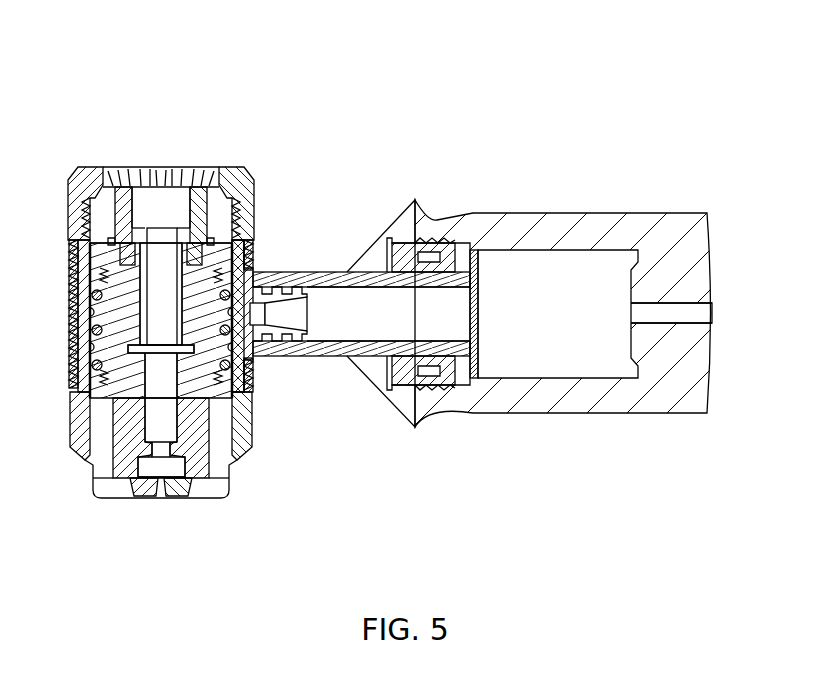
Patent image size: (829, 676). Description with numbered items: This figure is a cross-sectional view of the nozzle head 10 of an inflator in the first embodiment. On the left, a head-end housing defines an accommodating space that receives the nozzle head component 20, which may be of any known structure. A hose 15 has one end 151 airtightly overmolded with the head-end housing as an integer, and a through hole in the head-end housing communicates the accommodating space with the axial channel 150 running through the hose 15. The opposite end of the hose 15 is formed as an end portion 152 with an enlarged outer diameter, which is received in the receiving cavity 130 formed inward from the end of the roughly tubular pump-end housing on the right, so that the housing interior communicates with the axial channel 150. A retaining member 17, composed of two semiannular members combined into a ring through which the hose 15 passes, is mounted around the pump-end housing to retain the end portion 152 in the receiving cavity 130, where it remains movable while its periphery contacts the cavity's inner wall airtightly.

The nozzle head 10 is at (460, 86).
The nozzle head component 20 is at (162, 193).
The hose 15 is at (322, 272).
The retaining member 17 is at (433, 238).
The end portion 152 is at (468, 250).
The receiving cavity 130 is at (567, 300).
The end of hose 151 is at (70, 322).
The axial channel 150 is at (333, 320).